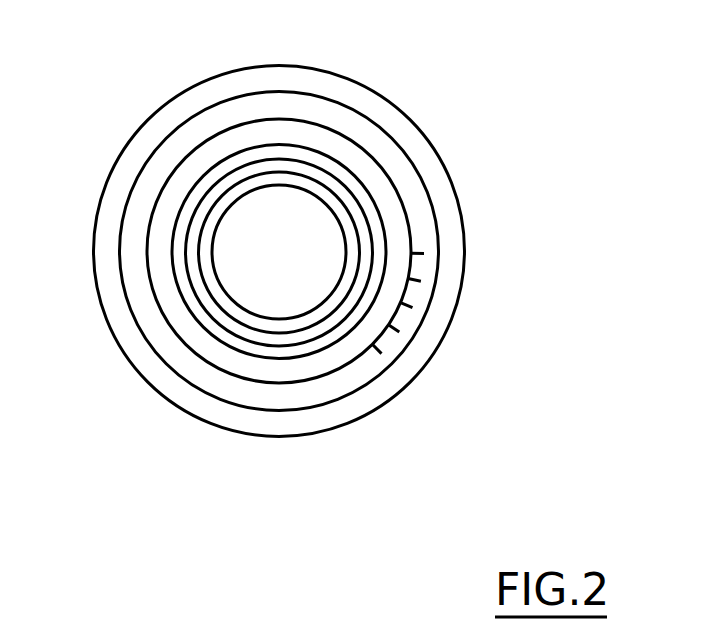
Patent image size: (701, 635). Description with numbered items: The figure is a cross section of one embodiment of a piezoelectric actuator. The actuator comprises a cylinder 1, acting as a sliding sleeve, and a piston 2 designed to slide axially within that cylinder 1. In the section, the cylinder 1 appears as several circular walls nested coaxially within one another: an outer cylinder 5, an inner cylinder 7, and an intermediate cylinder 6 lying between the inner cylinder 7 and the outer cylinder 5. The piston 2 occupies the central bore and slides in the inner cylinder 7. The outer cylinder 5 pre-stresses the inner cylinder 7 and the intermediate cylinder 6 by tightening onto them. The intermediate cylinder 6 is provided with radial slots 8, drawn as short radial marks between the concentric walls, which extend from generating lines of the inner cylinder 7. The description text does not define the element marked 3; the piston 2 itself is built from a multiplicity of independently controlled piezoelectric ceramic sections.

The cylinder 1 is at (257, 309).
The piston 2 is at (243, 273).
The cladding layers 3 is at (253, 180).
The outer cylinder 5 is at (358, 405).
The intermediate cylinder 6 is at (275, 395).
The inner cylinder 7 is at (205, 350).
The radial slots 8 is at (429, 365).